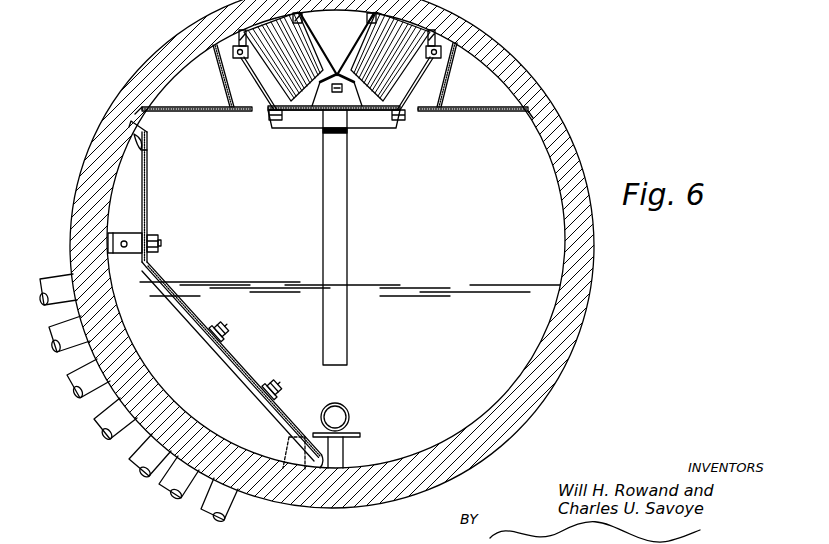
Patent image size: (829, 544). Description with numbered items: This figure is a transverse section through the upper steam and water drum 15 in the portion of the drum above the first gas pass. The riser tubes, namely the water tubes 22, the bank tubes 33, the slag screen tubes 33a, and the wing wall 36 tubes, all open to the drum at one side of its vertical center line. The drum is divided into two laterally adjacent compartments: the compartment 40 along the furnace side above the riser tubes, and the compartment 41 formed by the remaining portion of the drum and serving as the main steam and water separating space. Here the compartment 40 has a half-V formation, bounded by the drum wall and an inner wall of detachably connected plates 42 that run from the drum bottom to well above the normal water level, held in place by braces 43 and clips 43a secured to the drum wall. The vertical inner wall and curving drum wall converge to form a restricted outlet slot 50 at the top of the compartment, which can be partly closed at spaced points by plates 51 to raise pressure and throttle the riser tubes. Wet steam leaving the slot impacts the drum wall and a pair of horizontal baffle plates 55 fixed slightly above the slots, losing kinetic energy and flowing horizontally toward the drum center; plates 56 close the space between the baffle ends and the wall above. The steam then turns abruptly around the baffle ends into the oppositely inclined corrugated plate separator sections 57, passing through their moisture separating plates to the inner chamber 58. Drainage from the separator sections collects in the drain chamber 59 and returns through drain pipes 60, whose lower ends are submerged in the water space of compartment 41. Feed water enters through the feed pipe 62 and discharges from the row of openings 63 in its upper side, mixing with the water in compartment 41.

The steam and water drum 15 is at (517, 60).
The water tubes 22 is at (54, 276).
The tubes 33 is at (128, 483).
The slag screen tubes 33a is at (75, 424).
The wing wall 36 is at (57, 354).
The compartment 40 is at (202, 389).
The compartment 41 is at (437, 357).
The plates 42 is at (148, 198).
The braces 43 is at (123, 233).
The clips 43a is at (148, 151).
The outlet slot 50 is at (136, 138).
The plates 51 is at (141, 126).
The baffle plates 55 is at (215, 111).
The plates 56 is at (442, 91).
The corrugated plate separator sections 57 is at (270, 72).
The inner chamber 58 is at (347, 41).
The drain chamber 59 is at (315, 98).
The drain pipes 60 is at (348, 330).
The feed pipe 62 is at (347, 407).
The openings 63 is at (336, 403).